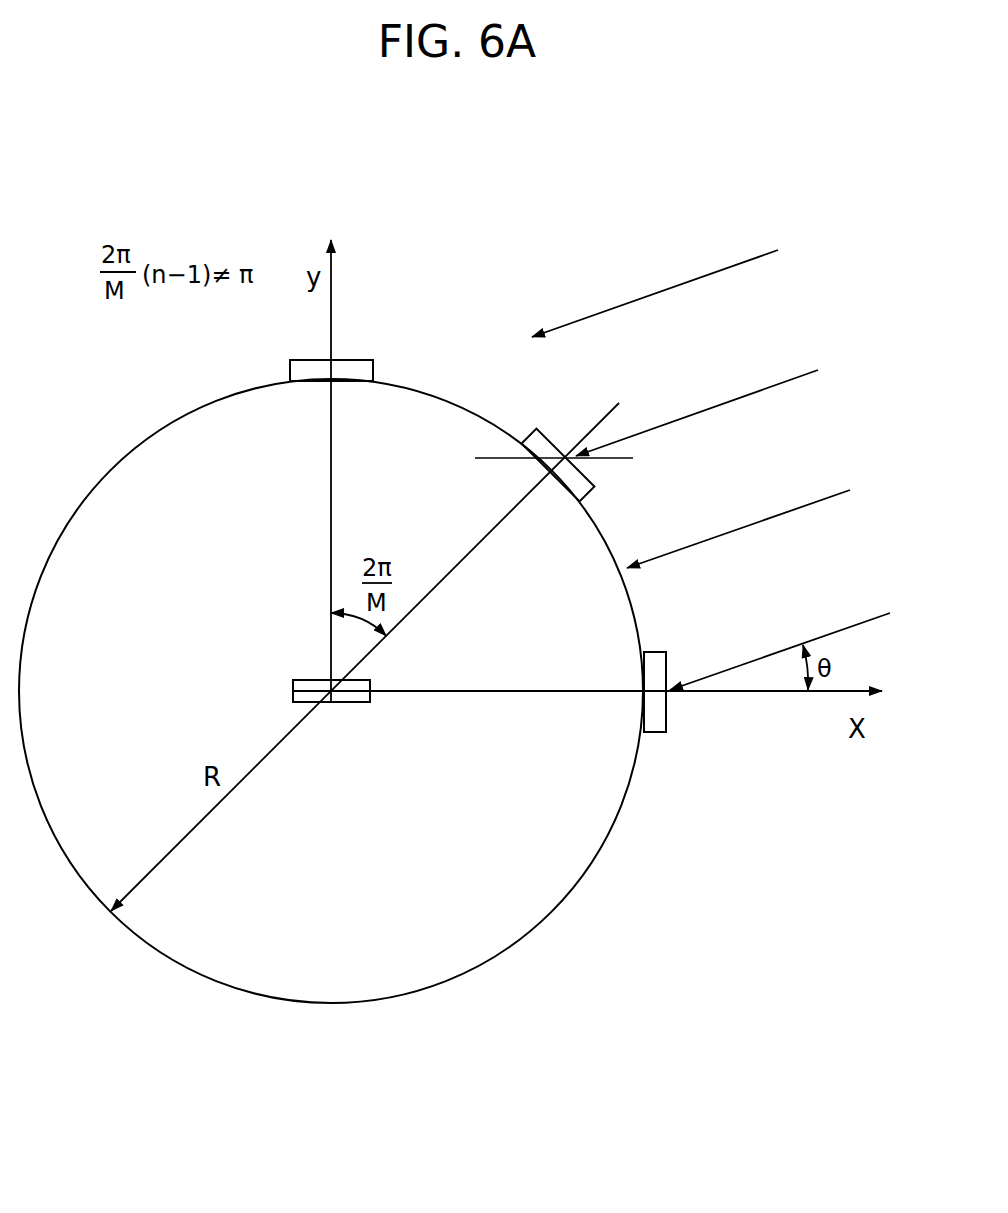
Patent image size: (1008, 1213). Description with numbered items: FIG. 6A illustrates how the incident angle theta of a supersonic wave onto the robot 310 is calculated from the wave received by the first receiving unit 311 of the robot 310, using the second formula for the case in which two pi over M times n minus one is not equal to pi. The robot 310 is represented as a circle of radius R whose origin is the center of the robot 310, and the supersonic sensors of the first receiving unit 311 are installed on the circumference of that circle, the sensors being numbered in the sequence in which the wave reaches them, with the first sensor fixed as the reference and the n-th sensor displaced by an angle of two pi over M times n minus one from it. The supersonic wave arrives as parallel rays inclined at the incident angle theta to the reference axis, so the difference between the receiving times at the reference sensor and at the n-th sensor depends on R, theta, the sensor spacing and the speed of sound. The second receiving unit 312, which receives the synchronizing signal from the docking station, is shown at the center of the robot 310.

The robot 310 is at (191, 416).
The first receiving unit 311 is at (356, 368).
The second receiving unit 312 is at (296, 684).